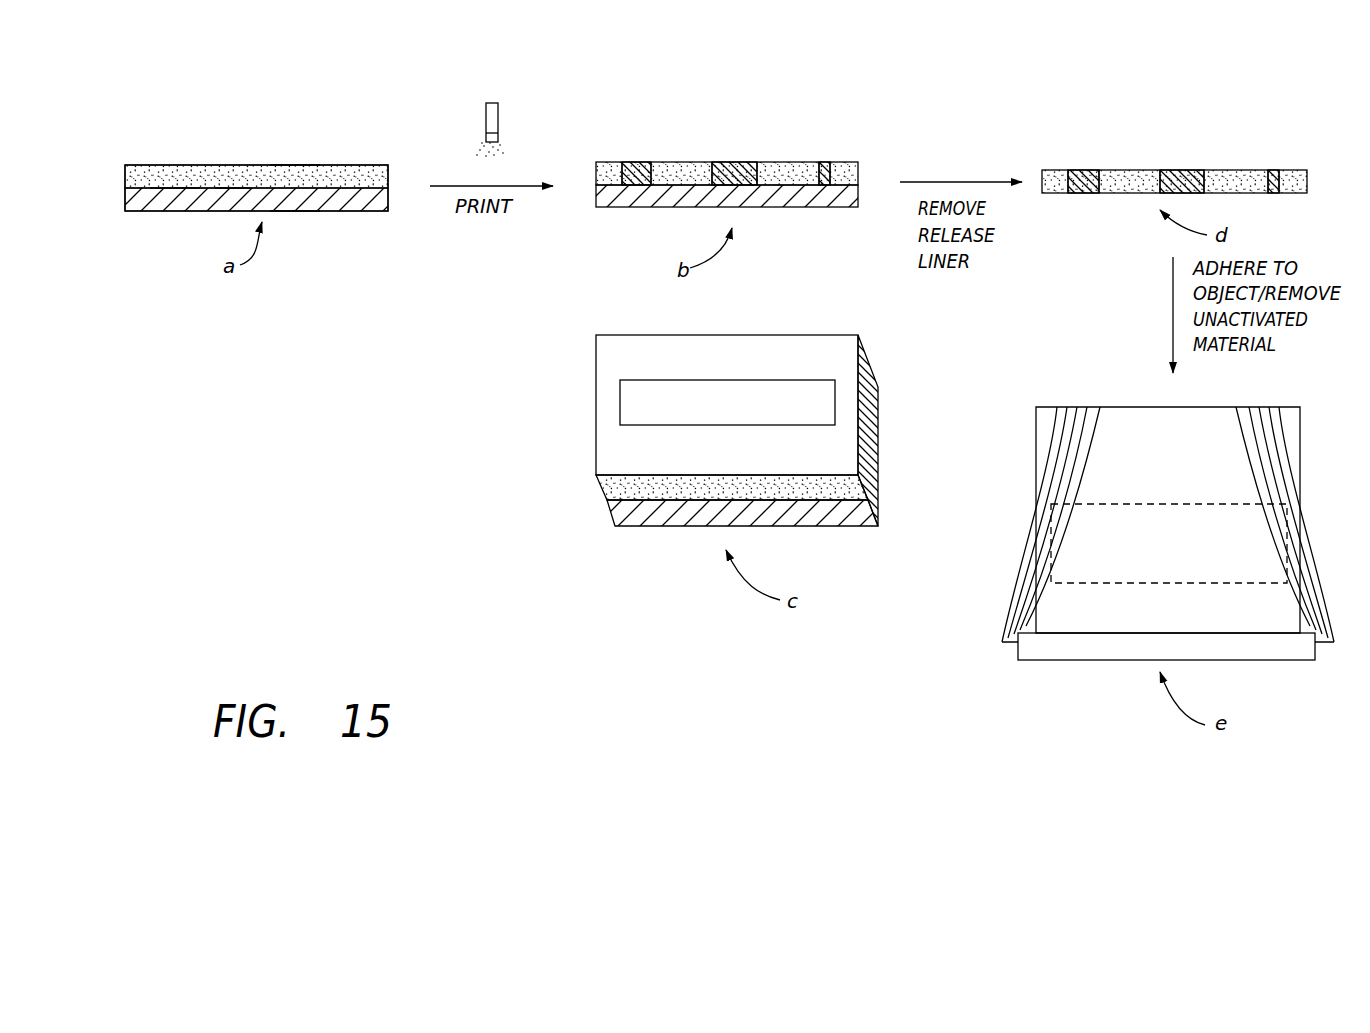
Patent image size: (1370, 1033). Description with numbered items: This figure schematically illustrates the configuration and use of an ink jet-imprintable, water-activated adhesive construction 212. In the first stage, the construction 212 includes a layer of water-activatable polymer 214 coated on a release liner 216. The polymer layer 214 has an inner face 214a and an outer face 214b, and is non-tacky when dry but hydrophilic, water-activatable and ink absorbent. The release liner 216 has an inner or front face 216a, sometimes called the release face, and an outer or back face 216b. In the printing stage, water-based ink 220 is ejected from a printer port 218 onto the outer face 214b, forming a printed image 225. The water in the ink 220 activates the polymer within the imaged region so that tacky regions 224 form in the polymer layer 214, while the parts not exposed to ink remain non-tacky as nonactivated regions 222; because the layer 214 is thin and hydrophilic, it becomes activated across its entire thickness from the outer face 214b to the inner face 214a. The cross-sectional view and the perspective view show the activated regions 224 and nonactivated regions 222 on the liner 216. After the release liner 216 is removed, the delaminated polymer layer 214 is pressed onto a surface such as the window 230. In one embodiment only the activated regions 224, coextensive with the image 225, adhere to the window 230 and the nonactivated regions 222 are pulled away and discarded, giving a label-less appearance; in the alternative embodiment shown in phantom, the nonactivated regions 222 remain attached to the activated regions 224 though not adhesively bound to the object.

The imprintable adhesive construction 212 is at (117, 152).
The layer of water-activatable polymer 214 is at (355, 176).
The inner face 214a is at (244, 189).
The outer face 214b is at (290, 165).
The release liner 216 is at (195, 202).
The inner or front face 216a is at (167, 188).
The outer or back face 216b is at (297, 210).
The printer port 218 is at (495, 115).
The water-based ink 220 is at (505, 150).
The nonactivated regions 222 is at (608, 162).
The tacky regions 224 is at (640, 162).
The printed image 225 is at (612, 405).
The window 230 is at (1061, 625).